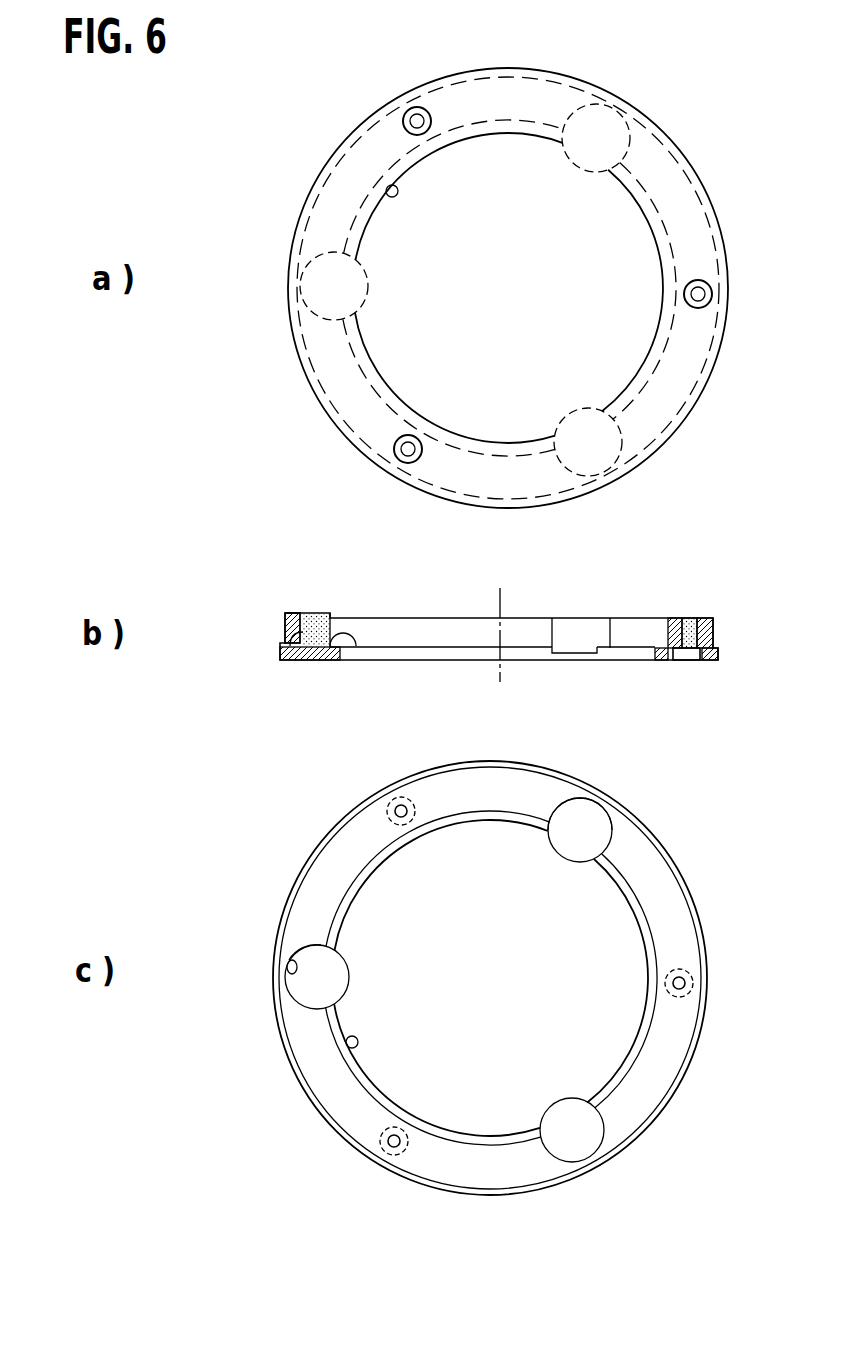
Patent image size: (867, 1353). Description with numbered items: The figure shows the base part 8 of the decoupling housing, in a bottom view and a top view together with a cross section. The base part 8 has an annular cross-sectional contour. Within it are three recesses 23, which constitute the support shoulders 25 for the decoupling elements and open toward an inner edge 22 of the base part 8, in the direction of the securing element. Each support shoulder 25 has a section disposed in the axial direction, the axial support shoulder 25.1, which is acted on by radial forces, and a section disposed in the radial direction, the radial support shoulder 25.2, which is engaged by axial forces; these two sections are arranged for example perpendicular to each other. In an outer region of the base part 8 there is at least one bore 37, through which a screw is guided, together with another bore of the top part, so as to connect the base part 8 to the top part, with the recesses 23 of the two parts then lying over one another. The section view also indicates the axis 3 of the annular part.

The base part 8 is at (690, 163).
The bore 37 is at (414, 114).
The inner edge 22 is at (382, 194).
The support shoulder 25 is at (311, 636).
The recess 23 is at (313, 957).
The axial support shoulder 25.1 is at (296, 652).
The radial support shoulder 25.2 is at (357, 643).
The axis 3 is at (504, 599).